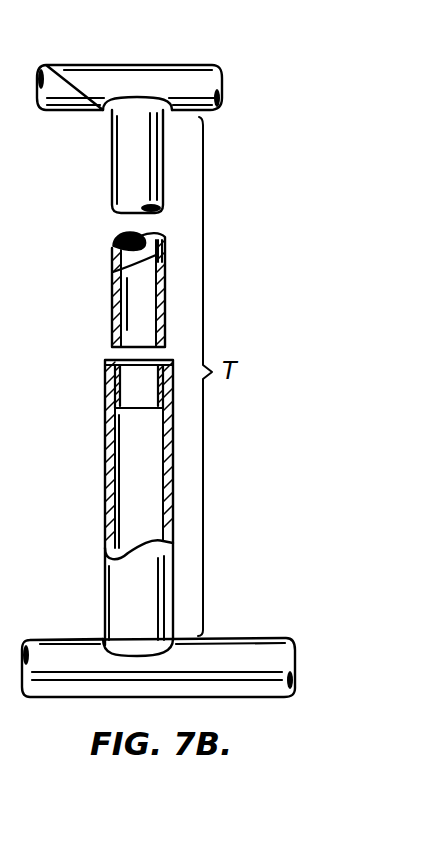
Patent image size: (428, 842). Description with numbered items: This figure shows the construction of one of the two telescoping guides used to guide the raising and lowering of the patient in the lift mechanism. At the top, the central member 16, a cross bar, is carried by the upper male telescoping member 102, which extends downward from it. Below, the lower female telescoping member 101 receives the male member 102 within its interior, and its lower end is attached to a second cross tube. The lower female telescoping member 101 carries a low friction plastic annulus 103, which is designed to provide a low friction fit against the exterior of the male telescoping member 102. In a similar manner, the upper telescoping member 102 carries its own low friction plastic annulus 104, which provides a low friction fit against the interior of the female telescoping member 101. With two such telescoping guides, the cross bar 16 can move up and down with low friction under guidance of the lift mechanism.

The central member 16 is at (133, 65).
The lower female telescoping member 101 is at (105, 513).
The upper male telescoping member 102 is at (112, 183).
The low friction plastic annulus 103 is at (105, 393).
The low friction plastic annulus 104 is at (112, 313).